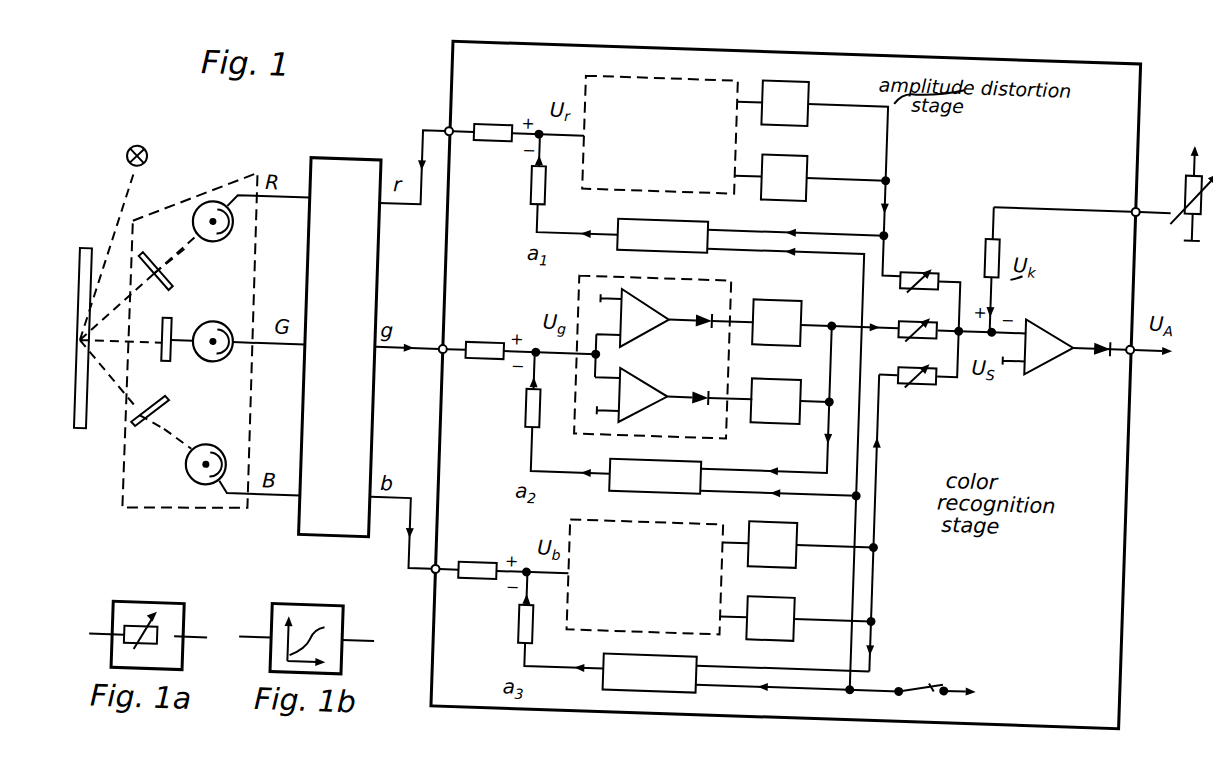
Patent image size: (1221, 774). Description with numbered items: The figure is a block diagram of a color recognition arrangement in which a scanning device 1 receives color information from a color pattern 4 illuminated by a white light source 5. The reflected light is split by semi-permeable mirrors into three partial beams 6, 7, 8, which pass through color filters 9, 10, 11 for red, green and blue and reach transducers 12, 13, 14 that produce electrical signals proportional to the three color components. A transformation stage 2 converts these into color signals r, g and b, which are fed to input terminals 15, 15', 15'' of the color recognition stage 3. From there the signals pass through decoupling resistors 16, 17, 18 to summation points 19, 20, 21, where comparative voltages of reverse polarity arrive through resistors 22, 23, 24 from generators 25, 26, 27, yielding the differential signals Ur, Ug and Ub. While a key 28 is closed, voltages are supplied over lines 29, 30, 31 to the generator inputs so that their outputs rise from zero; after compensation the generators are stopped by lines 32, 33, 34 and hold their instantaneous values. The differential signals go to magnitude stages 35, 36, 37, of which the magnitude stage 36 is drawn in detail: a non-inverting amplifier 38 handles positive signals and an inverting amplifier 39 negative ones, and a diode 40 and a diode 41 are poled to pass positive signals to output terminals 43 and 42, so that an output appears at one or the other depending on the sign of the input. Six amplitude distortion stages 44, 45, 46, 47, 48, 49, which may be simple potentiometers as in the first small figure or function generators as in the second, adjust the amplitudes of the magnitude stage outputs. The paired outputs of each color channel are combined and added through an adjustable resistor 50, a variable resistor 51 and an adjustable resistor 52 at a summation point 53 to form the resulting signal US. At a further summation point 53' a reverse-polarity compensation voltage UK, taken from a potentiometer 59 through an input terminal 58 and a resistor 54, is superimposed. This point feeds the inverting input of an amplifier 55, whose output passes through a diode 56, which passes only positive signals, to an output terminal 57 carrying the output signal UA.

The scanning device 1 is at (128, 520).
The transformation stage 2 is at (304, 550).
The color recognition stage 3 is at (442, 66).
The color pattern 4 is at (82, 440).
The white light source 5 is at (139, 170).
The partial beam 6 is at (178, 266).
The partial beam 7 is at (185, 368).
The partial beam 8 is at (164, 448).
The color filter 9 is at (169, 299).
The color filter 10 is at (162, 338).
The color filter 11 is at (164, 420).
The transducer 12 is at (220, 250).
The transducer 13 is at (218, 335).
The transducer 14 is at (193, 502).
The input terminal 15 is at (425, 113).
The input terminal 15' is at (429, 318).
The input terminal 15'' is at (412, 585).
The decoupling resistor 16 is at (478, 130).
The decoupling resistor 17 is at (480, 344).
The decoupling resistor 18 is at (476, 568).
The summation point 19 is at (532, 130).
The summation point 20 is at (534, 352).
The summation point 21 is at (532, 572).
The resistor 22 is at (508, 186).
The resistor 23 is at (522, 410).
The resistor 24 is at (528, 624).
The generator 25 is at (690, 236).
The generator 26 is at (620, 484).
The generator 27 is at (610, 684).
The key 28 is at (924, 670).
The line 29 is at (510, 232).
The line 30 is at (532, 468).
The line 31 is at (528, 668).
The line 32 is at (830, 226).
The line 33 is at (782, 464).
The line 34 is at (780, 665).
The magnitude stage 35 is at (712, 84).
The magnitude stage 36 is at (724, 284).
The magnitude stage 37 is at (702, 524).
The non-inverting amplifier 38 is at (642, 385).
The inverting amplifier 39 is at (640, 310).
The diode 40 is at (700, 310).
The diode 41 is at (698, 388).
The output terminal 42 is at (726, 389).
The output terminal 43 is at (728, 312).
The amplitude distortion stage 44 is at (780, 97).
The amplitude distortion stage 45 is at (782, 172).
The amplitude distortion stage 46 is at (782, 314).
The amplitude distortion stage 47 is at (782, 392).
The amplitude distortion stage 48 is at (786, 536).
The amplitude distortion stage 49 is at (786, 610).
The adjustable resistor 50 is at (911, 260).
The variable resistor 51 is at (896, 312).
The adjustable resistor 52 is at (896, 358).
The summation point 53 is at (966, 313).
The summation point 53' is at (1017, 312).
The resistor 54 is at (994, 238).
The amplifier 55 is at (1054, 344).
The diode 56 is at (1098, 320).
The output terminal 57 is at (1132, 338).
The input terminal 58 is at (1114, 192).
The potentiometer 59 is at (1180, 202).